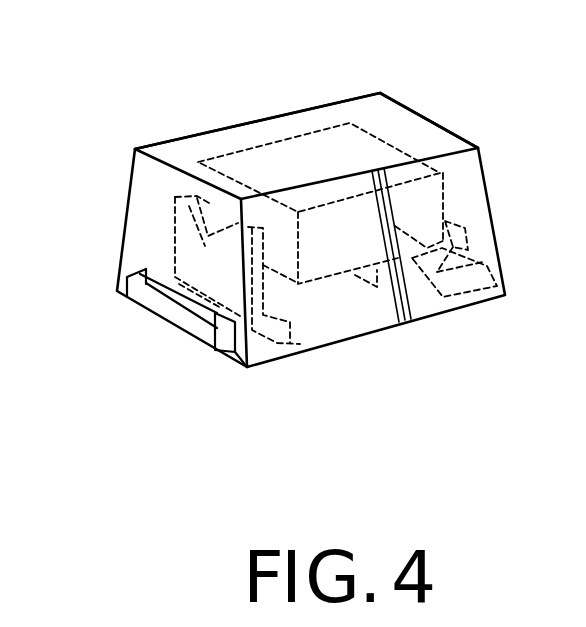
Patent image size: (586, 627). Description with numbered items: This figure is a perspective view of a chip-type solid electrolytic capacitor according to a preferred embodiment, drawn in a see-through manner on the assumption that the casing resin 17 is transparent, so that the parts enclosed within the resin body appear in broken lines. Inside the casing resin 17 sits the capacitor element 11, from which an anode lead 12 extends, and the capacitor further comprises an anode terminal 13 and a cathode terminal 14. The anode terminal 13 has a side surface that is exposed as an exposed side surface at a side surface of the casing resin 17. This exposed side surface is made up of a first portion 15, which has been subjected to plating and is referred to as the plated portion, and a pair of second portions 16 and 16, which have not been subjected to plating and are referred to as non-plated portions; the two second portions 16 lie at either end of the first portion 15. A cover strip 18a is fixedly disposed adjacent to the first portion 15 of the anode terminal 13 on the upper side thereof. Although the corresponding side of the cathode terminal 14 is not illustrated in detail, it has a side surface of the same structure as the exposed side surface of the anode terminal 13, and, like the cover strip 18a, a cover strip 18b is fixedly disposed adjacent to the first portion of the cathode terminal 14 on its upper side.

The capacitor element 11 is at (307, 150).
The anode lead 12 is at (218, 218).
The anode terminal 13 is at (302, 342).
The cathode terminal 14 is at (463, 283).
The first portion 15 is at (178, 318).
The second portions 16 is at (123, 292).
The casing resin 17 is at (423, 137).
The cover strip 18a is at (152, 268).
The cover strip 18b is at (454, 231).